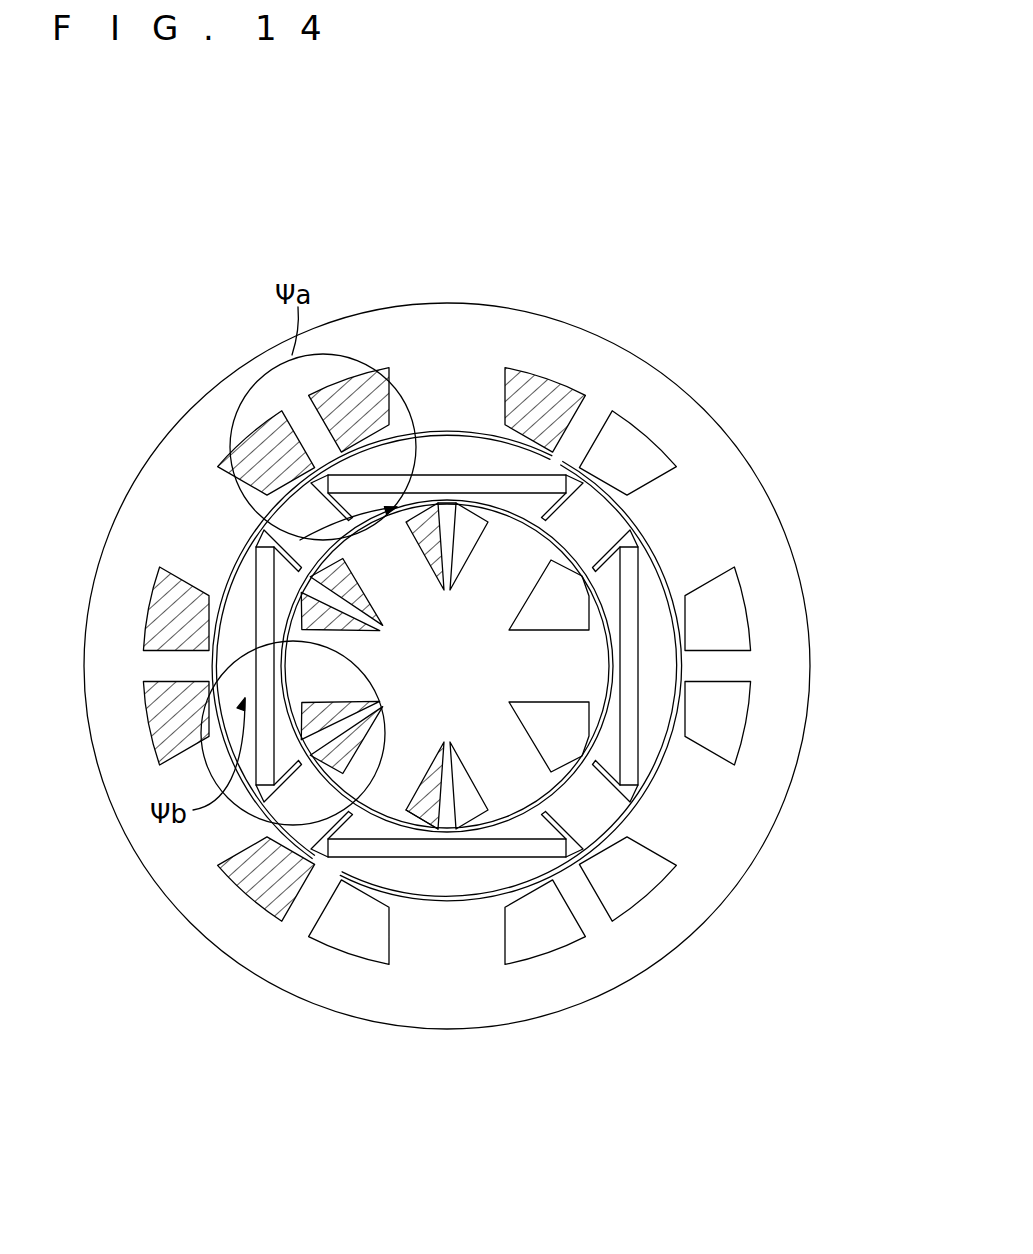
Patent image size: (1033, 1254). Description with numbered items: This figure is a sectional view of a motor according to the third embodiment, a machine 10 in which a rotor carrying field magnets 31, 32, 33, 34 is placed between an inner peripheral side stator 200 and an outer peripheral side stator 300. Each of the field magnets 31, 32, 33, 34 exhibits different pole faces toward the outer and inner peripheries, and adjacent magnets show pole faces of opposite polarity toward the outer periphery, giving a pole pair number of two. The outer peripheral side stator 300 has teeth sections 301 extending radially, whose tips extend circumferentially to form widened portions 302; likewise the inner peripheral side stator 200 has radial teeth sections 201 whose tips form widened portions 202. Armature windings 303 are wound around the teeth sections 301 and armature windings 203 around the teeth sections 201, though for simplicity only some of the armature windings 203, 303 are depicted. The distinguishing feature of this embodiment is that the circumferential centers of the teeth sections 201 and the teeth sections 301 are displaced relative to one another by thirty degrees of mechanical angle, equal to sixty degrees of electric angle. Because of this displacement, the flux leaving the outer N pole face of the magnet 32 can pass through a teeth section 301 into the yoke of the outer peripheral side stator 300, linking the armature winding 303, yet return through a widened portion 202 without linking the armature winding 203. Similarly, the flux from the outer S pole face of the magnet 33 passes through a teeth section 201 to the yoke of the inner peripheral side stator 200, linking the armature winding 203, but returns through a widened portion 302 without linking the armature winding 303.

The rotary electric machine 10 is at (663, 697).
The inner peripheral side stator 200 is at (520, 775).
The teeth sections 201 is at (395, 537).
The widened portions 202 is at (425, 510).
The armature windings 203 is at (425, 535).
The outer peripheral side stator 300 is at (725, 488).
The teeth sections 301 is at (236, 800).
The widened portions 302 is at (298, 858).
The armature windings 303 is at (415, 462).
The field magnet 31 is at (638, 568).
The field magnet 32 is at (560, 484).
The field magnet 33 is at (263, 560).
The field magnet 34 is at (482, 858).